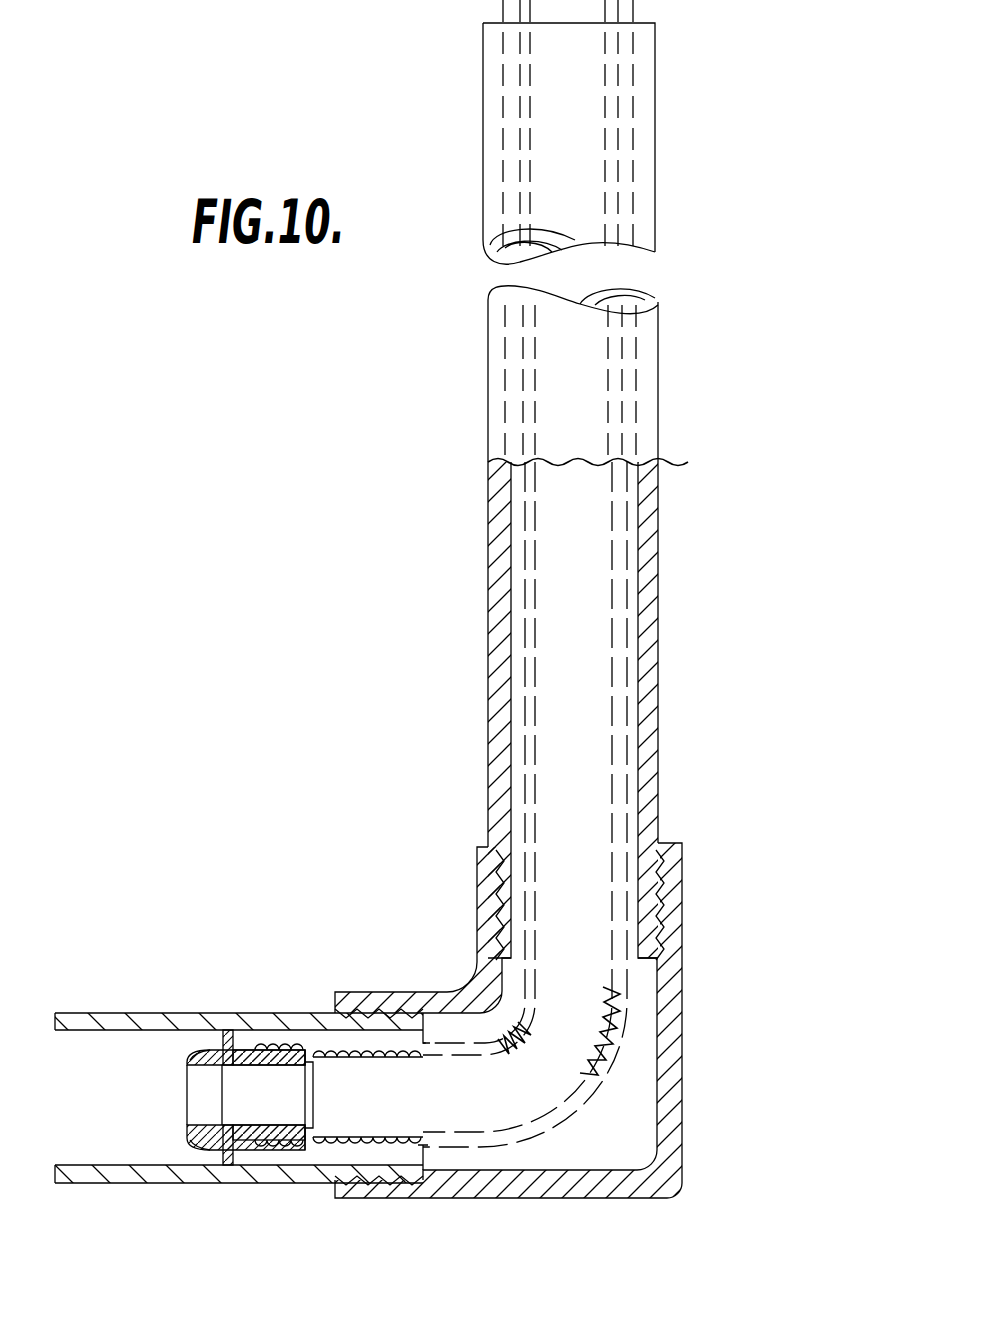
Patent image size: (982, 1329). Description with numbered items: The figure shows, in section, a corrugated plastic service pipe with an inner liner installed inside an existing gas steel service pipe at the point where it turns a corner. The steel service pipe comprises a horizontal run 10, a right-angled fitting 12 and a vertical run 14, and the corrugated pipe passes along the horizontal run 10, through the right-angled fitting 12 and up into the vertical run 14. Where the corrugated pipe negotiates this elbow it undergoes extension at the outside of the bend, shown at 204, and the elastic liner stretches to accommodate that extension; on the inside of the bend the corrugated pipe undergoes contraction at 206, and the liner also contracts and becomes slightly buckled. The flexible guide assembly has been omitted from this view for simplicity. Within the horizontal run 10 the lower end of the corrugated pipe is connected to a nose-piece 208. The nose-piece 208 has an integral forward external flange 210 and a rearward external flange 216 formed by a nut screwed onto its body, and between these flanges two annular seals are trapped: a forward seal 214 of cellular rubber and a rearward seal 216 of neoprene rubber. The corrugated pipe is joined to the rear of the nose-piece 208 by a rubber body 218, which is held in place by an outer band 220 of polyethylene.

The horizontal run 10 is at (118, 1178).
The right-angled fitting 12 is at (670, 965).
The vertical run 14 is at (652, 557).
The extension of the corrugated pipe 204 is at (632, 1024).
The contraction of the corrugated pipe 206 is at (512, 1000).
The nose-piece 208 is at (182, 1115).
The forward external flange 210 is at (203, 1062).
The forward seal 214 is at (226, 1165).
The rearward seal 216 is at (250, 1048).
The rubber body 218 is at (298, 1048).
The outer band 220 is at (279, 1048).